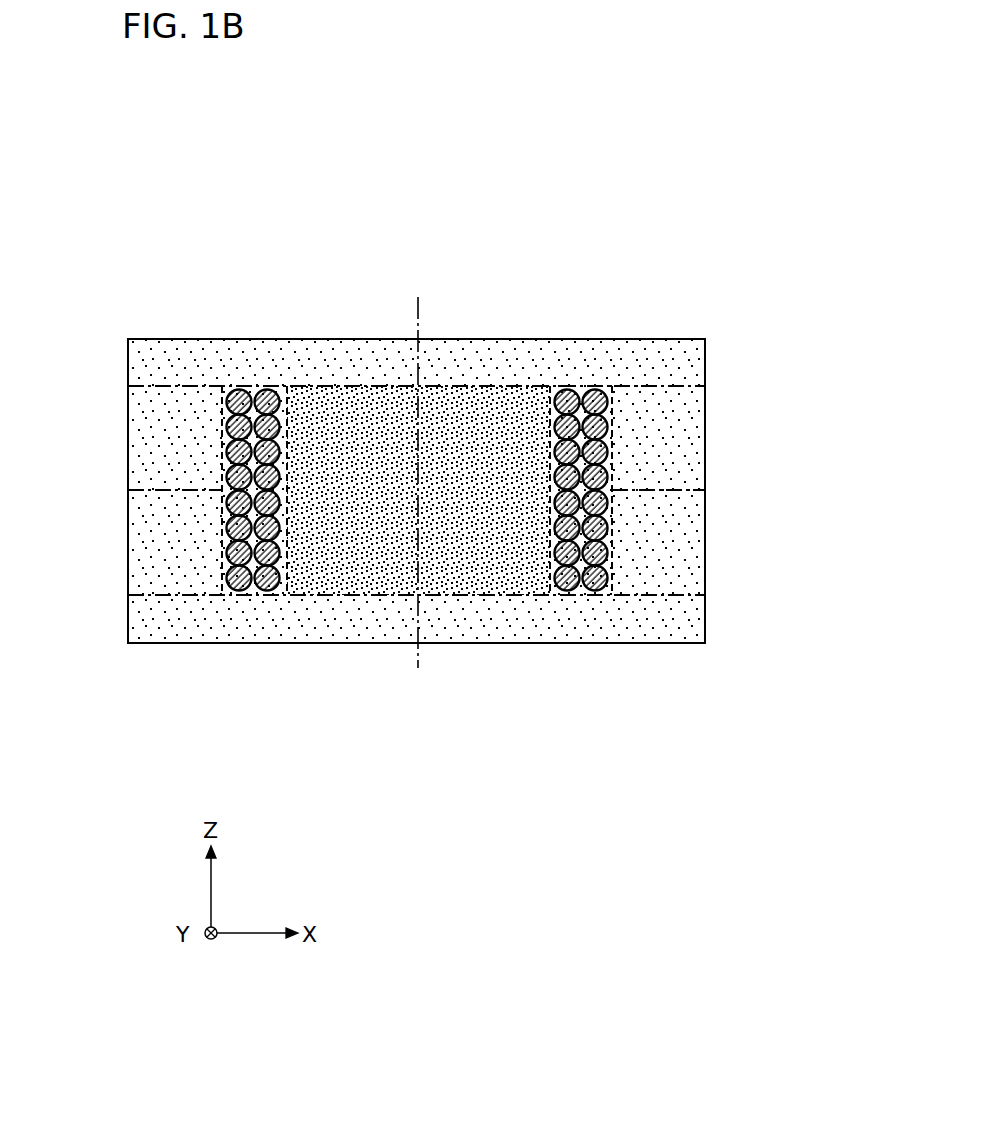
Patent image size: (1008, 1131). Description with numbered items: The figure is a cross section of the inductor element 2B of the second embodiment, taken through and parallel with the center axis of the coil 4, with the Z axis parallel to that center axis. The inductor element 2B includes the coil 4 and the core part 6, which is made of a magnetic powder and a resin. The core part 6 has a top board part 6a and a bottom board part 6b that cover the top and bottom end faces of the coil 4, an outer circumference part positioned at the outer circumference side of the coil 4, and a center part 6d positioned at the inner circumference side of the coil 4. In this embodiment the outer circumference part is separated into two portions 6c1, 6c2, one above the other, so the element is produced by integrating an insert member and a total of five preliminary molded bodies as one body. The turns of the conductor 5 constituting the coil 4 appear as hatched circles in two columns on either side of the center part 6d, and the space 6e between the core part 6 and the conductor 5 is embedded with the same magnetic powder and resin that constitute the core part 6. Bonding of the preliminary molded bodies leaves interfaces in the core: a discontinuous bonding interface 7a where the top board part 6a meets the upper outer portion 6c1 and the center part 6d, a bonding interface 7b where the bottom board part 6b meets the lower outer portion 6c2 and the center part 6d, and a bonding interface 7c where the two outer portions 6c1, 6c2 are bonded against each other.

The inductor element 2B is at (579, 206).
The core part 6 is at (652, 338).
The top board part 6a is at (357, 365).
The bottom board part 6b is at (333, 618).
The outer circumference part (first portion) 6c1 is at (163, 428).
The outer circumference part (second portion) 6c2 is at (160, 578).
The center part 6d is at (478, 420).
The space 6e is at (245, 598).
The conductor 5 is at (228, 545).
The coil 4 is at (608, 520).
The bonding interface 7a is at (177, 386).
The bonding interface 7b is at (180, 596).
The bonding interface 7c is at (128, 490).